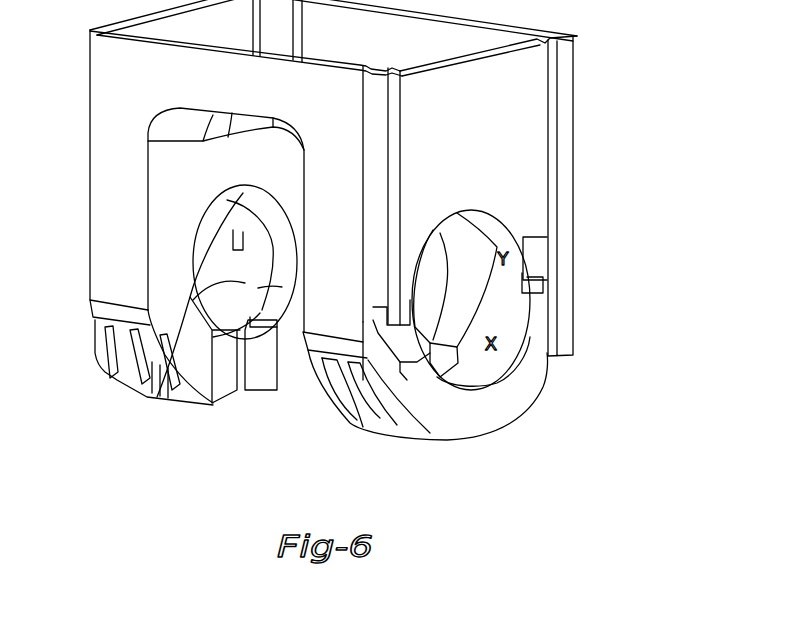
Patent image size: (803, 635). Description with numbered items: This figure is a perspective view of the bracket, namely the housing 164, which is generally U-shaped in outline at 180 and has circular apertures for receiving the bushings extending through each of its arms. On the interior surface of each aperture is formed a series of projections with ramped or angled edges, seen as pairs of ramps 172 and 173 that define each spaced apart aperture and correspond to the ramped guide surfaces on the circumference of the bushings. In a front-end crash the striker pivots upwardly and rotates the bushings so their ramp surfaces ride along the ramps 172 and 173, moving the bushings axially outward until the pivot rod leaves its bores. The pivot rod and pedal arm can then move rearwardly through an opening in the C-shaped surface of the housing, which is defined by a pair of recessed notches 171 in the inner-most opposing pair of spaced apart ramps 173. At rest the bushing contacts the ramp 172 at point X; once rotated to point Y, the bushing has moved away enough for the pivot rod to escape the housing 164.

The housing 164 is at (586, 99).
The recessed notches 171 is at (223, 400).
The ramps 172 is at (157, 397).
The ramps 173 is at (262, 310).
The U-shaped outline 180 is at (282, 88).